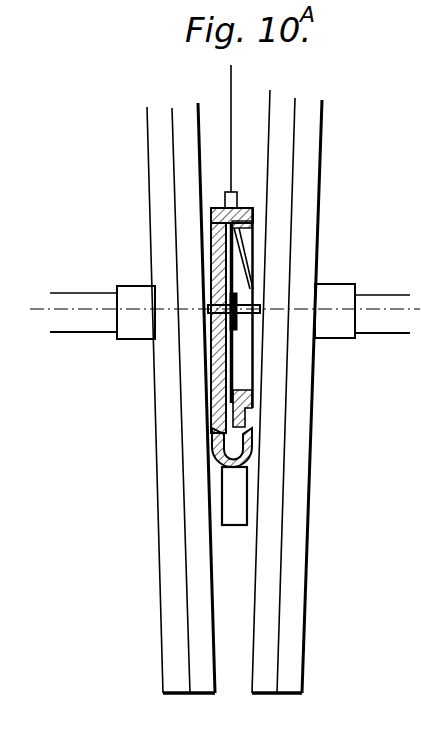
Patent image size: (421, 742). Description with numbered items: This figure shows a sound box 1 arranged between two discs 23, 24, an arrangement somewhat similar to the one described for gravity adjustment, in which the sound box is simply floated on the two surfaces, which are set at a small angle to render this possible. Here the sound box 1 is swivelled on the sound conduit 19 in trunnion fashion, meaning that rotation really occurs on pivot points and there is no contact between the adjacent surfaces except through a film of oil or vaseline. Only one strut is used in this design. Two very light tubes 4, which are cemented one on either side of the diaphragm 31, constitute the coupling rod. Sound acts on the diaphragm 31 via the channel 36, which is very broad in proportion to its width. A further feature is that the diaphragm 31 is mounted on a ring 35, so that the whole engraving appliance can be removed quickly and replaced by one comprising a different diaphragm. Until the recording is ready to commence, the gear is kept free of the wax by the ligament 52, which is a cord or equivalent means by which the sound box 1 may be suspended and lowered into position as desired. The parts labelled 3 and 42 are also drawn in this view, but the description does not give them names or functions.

The sound box 1 is at (211, 222).
The housing body 3 is at (253, 257).
The light tubes 4 is at (255, 317).
The sound conduit 19 is at (252, 458).
The disc 23 is at (190, 523).
The disc 24 is at (258, 602).
The diaphragm 31 is at (233, 360).
The ring 35 is at (255, 224).
The channel 36 is at (232, 382).
The plunger 42 is at (240, 513).
The ligament 52 is at (230, 92).